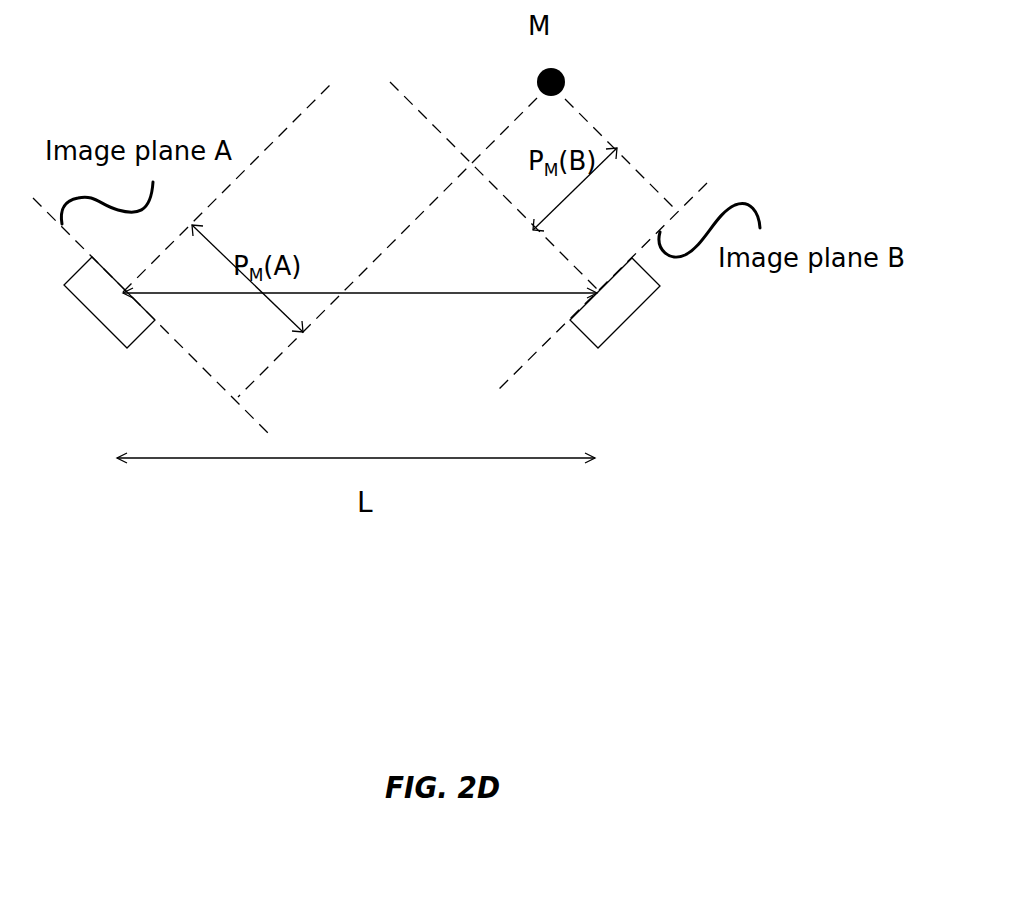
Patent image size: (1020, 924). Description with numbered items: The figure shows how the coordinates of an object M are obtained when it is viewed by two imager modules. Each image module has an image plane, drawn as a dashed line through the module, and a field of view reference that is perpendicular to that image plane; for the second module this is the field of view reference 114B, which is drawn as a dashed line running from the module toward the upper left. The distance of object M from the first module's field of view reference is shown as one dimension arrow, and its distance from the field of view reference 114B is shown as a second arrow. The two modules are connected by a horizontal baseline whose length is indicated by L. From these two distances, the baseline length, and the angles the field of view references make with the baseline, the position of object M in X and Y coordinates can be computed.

The field of view reference 114B is at (440, 88).